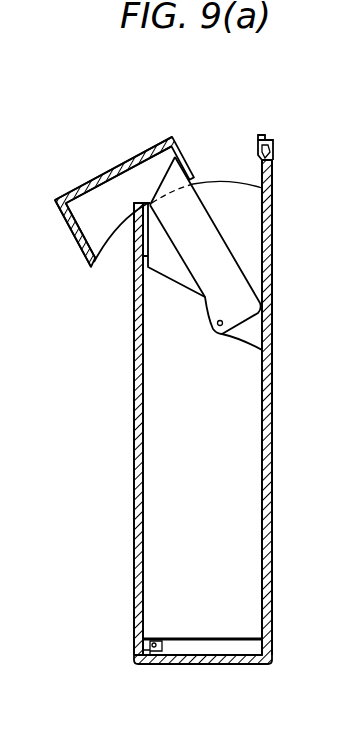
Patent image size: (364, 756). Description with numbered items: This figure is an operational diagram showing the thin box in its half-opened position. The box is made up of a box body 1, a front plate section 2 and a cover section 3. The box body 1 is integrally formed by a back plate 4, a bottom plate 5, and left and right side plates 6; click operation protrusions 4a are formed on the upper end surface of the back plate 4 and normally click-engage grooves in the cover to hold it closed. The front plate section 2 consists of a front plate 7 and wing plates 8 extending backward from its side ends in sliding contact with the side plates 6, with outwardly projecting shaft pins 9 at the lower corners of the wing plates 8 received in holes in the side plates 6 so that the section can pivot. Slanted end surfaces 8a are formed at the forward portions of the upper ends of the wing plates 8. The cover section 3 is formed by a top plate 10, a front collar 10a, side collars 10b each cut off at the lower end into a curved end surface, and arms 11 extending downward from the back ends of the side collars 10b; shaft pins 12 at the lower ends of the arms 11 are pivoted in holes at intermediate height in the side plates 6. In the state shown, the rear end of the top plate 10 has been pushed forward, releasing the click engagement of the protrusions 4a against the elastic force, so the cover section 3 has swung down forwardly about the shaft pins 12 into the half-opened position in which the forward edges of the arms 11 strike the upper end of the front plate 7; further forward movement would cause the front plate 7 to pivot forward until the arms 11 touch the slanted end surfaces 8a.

The box body 1 is at (291, 247).
The front plate section 2 is at (129, 392).
The cover section 3 is at (108, 189).
The back plate 4 is at (272, 350).
The click operation protrusion 4a is at (262, 137).
The bottom plate 5 is at (208, 660).
The side plate 6 is at (254, 207).
The front plate 7 is at (133, 468).
The wing plate 8 is at (153, 572).
The slanted end surface 8a is at (183, 287).
The shaft pin 9 is at (158, 653).
The top plate 10 is at (100, 175).
The front collar 10a is at (73, 236).
The side collar 10b is at (104, 235).
The arm 11 is at (213, 242).
The shaft pin 12 is at (220, 328).